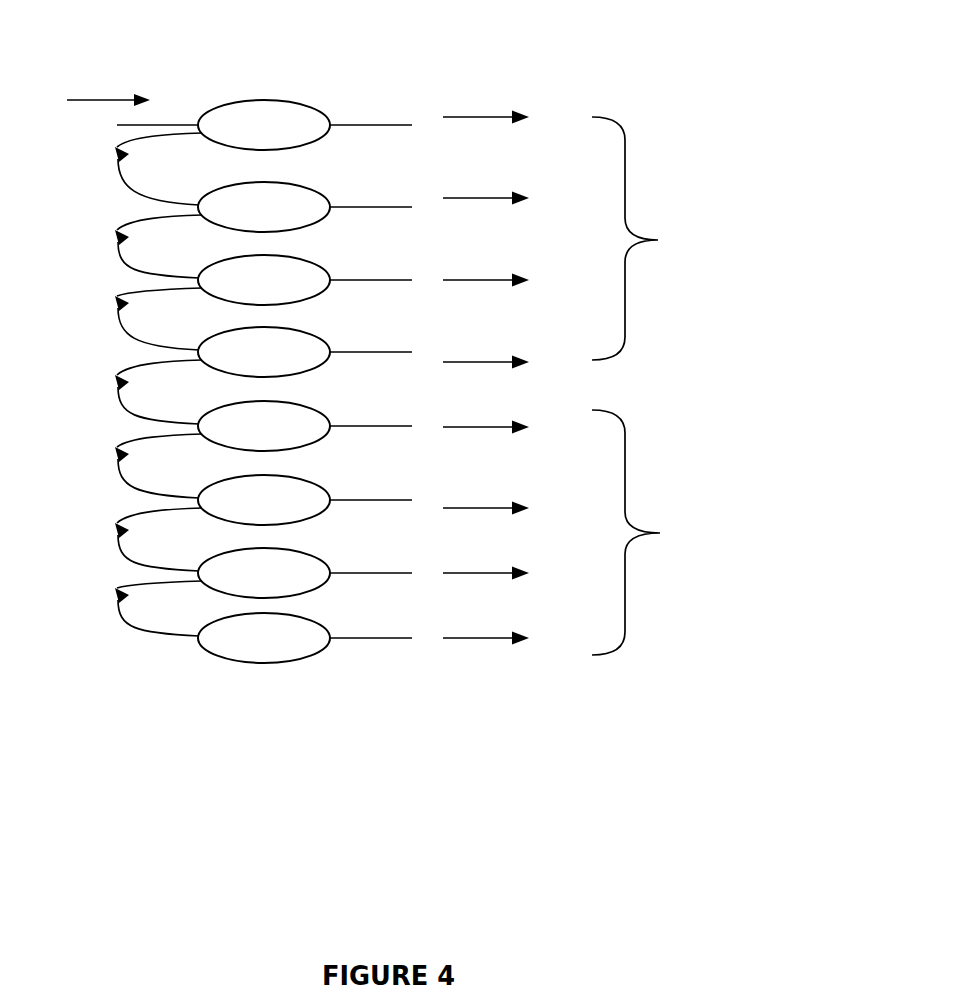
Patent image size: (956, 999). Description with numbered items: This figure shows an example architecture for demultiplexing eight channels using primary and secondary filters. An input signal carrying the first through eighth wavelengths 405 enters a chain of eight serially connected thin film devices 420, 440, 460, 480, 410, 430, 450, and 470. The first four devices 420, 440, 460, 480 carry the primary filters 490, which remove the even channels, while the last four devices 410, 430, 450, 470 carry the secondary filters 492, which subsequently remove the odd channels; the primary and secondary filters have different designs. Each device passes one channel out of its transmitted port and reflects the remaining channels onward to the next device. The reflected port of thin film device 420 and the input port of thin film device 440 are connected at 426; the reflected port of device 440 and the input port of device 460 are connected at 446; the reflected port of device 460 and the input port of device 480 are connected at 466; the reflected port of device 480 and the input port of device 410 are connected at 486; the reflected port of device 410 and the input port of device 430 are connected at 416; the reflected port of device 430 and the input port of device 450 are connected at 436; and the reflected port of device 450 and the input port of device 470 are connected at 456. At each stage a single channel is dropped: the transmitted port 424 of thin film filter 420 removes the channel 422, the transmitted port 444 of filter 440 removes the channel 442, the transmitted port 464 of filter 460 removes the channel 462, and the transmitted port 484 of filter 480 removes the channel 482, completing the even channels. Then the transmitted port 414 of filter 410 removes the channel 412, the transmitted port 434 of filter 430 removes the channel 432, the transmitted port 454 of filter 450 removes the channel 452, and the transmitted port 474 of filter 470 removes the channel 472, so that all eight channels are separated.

The input optical signal (wavelengths 1 through 8) 405 is at (116, 70).
The thin film device 410 is at (310, 404).
The channel 412 is at (489, 402).
The transmitted port 414 is at (346, 423).
The connection of reflected port and input port 416 is at (110, 461).
The thin film device 420 is at (310, 103).
The channel 422 is at (489, 94).
The transmitted port 424 is at (346, 122).
The connection of reflected port and input port 426 is at (110, 155).
The thin film device 430 is at (310, 478).
The channel 432 is at (489, 483).
The transmitted port 434 is at (346, 497).
The connection of reflected port and input port 436 is at (110, 541).
The thin film device 440 is at (310, 185).
The channel 442 is at (489, 178).
The transmitted port 444 is at (346, 204).
The connection of reflected port and input port 446 is at (110, 233).
The thin film device 450 is at (310, 551).
The channel 452 is at (489, 549).
The transmitted port 454 is at (346, 570).
The connection of reflected port and input port 456 is at (110, 599).
The thin film device 460 is at (310, 258).
The channel 462 is at (489, 256).
The transmitted port 464 is at (346, 277).
The connection of reflected port and input port 466 is at (110, 314).
The thin film device 470 is at (310, 616).
The channel 472 is at (489, 614).
The transmitted port 474 is at (346, 635).
The thin film device 480 is at (310, 330).
The channel 482 is at (489, 336).
The transmitted port 484 is at (346, 349).
The connection of reflected port and input port 486 is at (110, 392).
The primary filters 490 is at (737, 238).
The secondary filters 492 is at (740, 532).